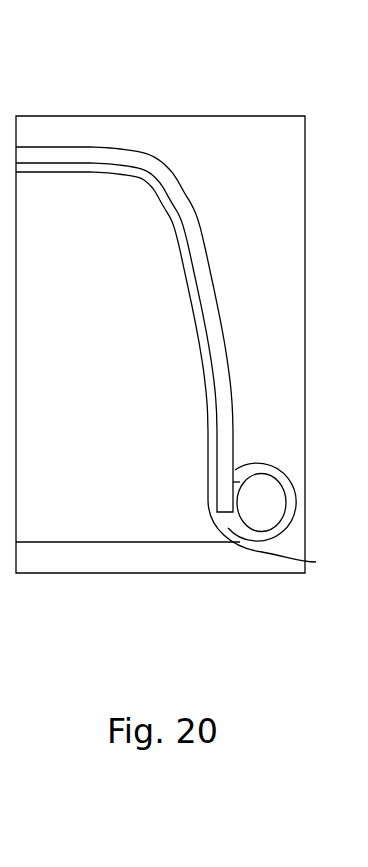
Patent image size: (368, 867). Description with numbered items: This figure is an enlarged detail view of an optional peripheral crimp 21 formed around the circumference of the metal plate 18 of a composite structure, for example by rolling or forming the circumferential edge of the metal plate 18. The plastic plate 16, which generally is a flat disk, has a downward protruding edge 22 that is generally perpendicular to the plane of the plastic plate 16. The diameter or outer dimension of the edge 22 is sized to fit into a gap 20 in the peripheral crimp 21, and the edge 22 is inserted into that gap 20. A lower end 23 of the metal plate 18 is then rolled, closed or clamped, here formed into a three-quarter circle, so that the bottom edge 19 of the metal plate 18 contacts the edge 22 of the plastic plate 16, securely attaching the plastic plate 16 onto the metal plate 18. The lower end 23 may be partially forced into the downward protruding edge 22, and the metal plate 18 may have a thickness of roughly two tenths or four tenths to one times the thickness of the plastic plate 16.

The plastic plate 16 is at (93, 155).
The metal plate 18 is at (172, 236).
The bottom edge 19 is at (222, 496).
The gap 20 is at (268, 489).
The peripheral crimp 21 is at (281, 445).
The downward protruding edge 22 is at (300, 561).
The lower end 23 is at (237, 481).